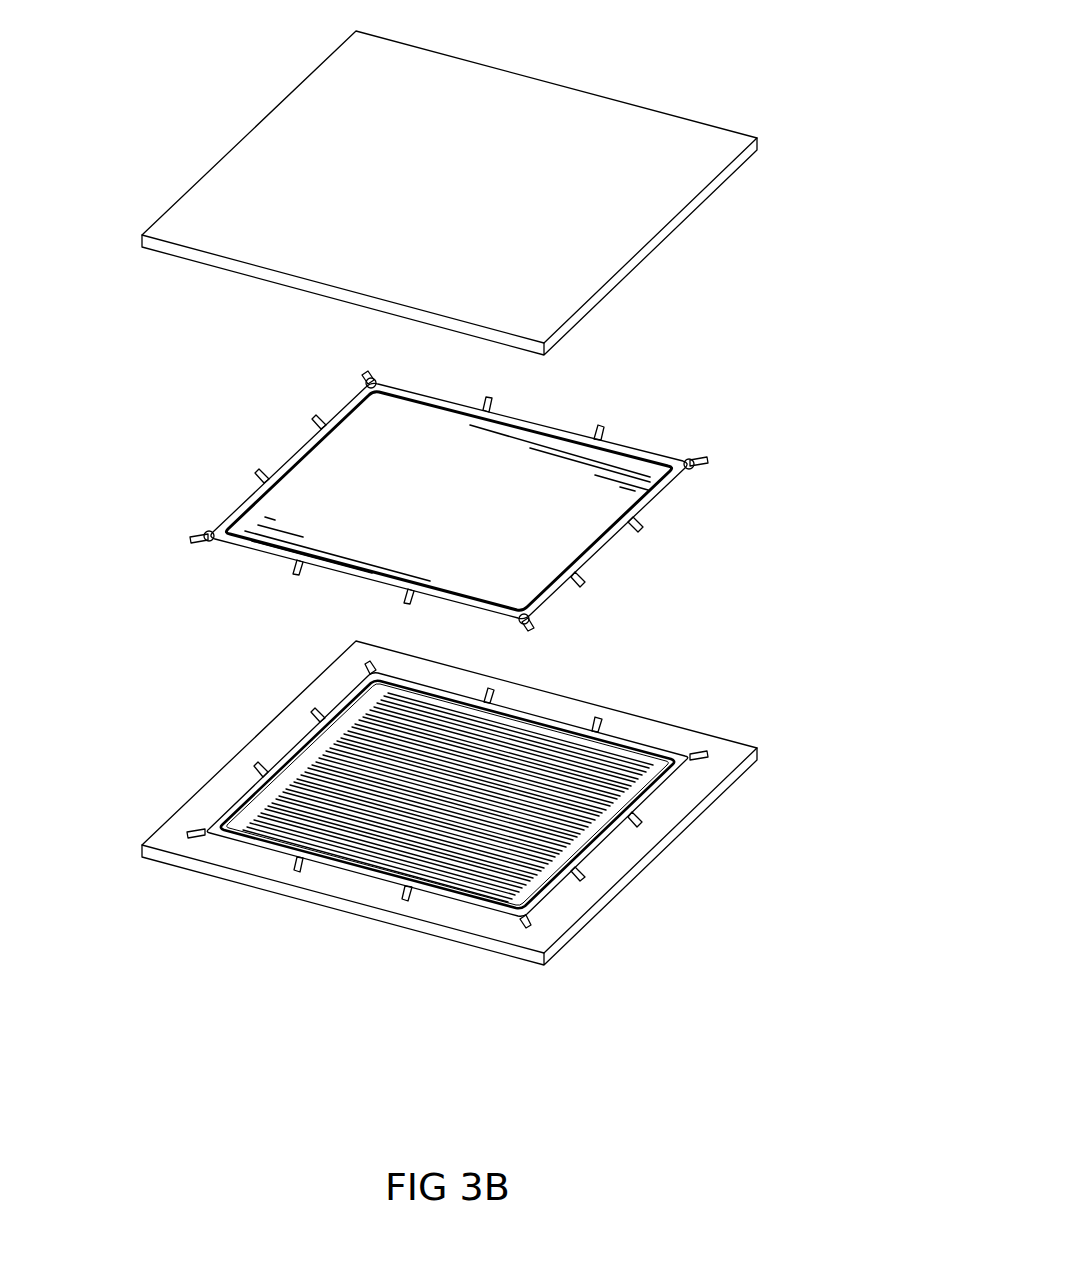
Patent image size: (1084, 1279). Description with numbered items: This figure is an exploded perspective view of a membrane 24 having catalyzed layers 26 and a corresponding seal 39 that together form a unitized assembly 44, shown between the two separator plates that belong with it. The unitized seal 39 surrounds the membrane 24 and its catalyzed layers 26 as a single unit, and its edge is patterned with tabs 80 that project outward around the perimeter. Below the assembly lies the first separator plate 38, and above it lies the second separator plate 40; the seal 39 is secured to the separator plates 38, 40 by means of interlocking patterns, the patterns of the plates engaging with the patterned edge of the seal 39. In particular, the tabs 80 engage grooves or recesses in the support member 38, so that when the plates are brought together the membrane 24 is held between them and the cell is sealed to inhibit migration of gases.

The second separator plate 40 is at (567, 99).
The membrane 24 is at (410, 501).
The catalyzed layers 26 is at (320, 463).
The unitized seal 39 is at (396, 501).
The tabs 80 is at (182, 545).
The unitized assembly 44 is at (793, 458).
The first separator plate 38 is at (707, 800).